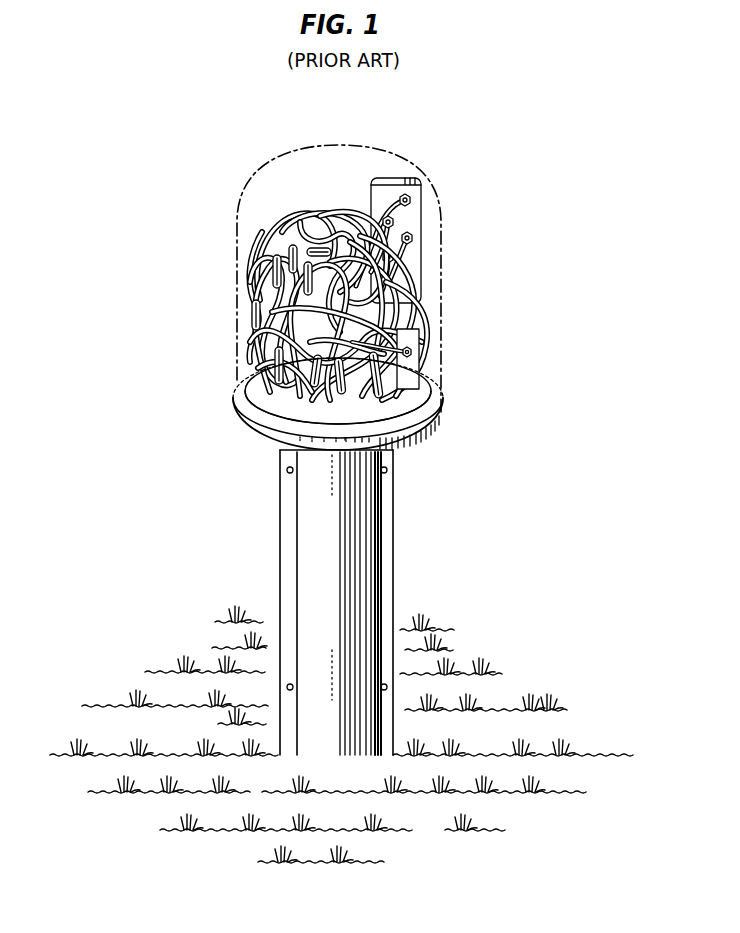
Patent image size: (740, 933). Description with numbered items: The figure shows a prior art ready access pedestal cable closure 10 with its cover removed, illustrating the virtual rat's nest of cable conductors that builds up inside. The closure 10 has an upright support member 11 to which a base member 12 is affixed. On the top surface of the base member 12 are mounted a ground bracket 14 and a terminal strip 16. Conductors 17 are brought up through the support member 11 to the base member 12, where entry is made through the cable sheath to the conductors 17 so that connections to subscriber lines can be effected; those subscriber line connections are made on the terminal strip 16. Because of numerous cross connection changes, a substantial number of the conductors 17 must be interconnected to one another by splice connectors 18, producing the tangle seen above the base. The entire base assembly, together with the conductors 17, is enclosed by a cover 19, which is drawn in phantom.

The ready access pedestal cable closure 10 is at (282, 520).
The support member 11 is at (363, 586).
The base member 12 is at (441, 412).
The ground bracket 14 is at (412, 376).
The terminal strip 16 is at (413, 213).
The conductors 17 is at (262, 310).
The splice connectors 18 is at (272, 361).
The cover 19 is at (382, 149).